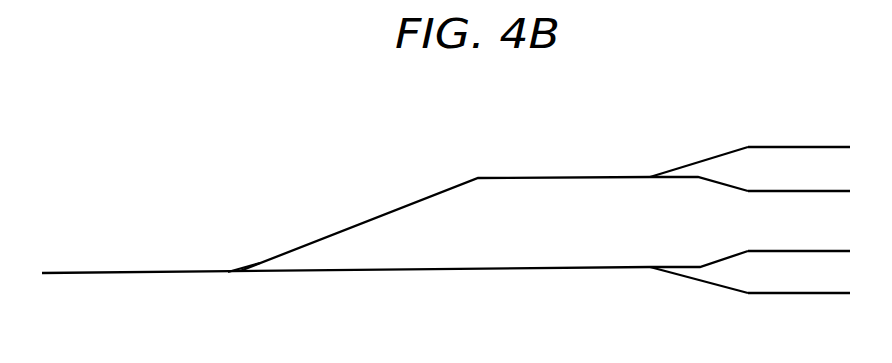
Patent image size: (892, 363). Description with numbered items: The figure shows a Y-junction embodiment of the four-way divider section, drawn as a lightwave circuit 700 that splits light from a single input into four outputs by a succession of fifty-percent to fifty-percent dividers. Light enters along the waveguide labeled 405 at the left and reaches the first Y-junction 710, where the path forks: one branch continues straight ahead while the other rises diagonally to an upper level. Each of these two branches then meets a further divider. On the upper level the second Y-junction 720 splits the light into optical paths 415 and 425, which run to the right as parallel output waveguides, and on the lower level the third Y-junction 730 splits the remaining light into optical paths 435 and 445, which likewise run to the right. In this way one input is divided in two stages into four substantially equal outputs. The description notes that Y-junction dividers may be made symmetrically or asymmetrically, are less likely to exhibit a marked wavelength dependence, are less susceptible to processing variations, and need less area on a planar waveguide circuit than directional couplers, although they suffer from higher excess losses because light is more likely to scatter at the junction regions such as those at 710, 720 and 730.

The lightwave circuit 700 is at (345, 112).
The input waveguide 405 is at (72, 271).
The first Y-junction 710 is at (226, 260).
The second Y-junction 720 is at (646, 169).
The third Y-junction 730 is at (648, 272).
The optical path 415 is at (834, 146).
The optical path 425 is at (834, 190).
The optical path 435 is at (834, 250).
The optical path 445 is at (834, 292).